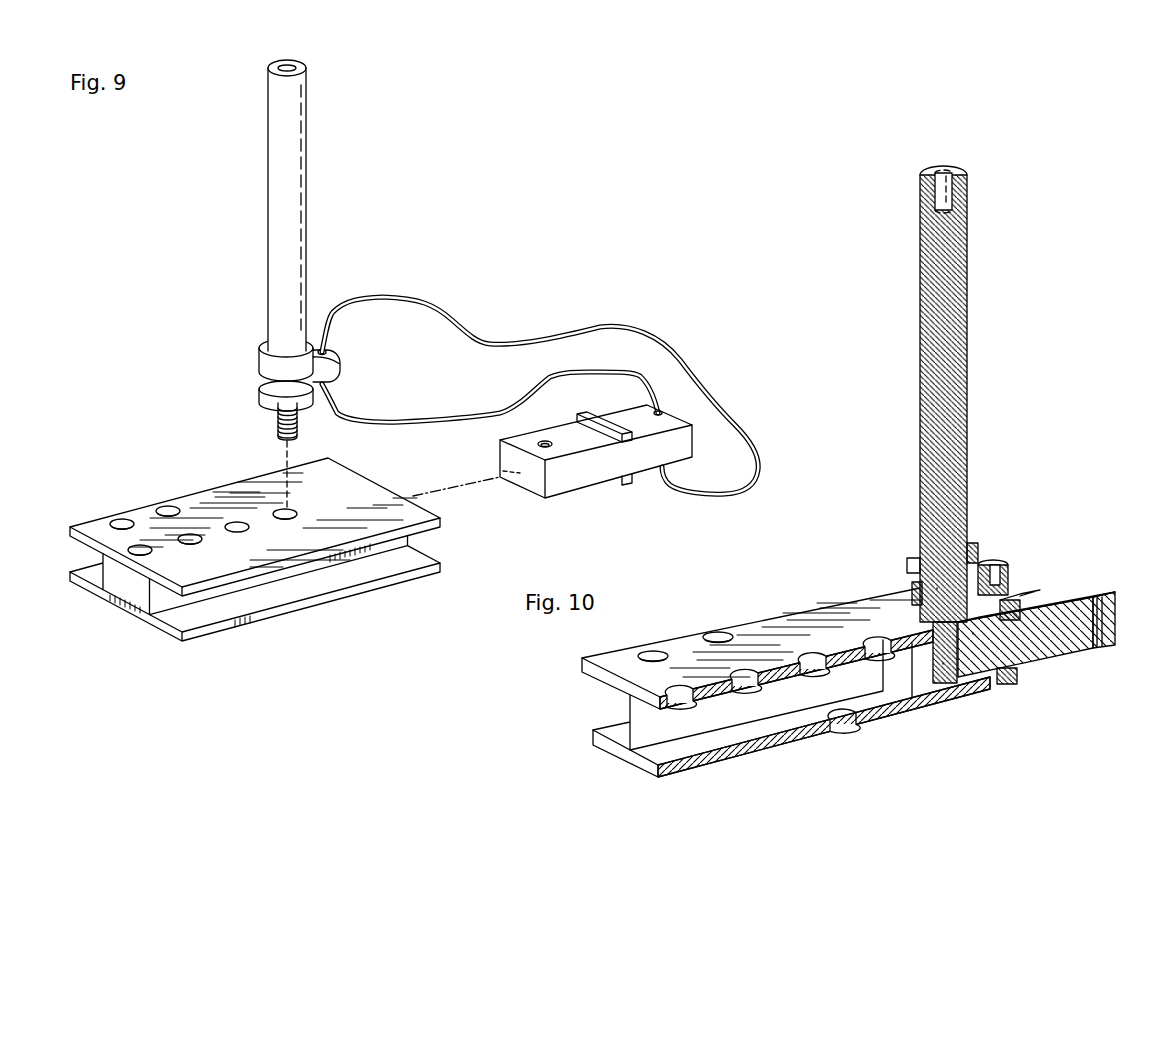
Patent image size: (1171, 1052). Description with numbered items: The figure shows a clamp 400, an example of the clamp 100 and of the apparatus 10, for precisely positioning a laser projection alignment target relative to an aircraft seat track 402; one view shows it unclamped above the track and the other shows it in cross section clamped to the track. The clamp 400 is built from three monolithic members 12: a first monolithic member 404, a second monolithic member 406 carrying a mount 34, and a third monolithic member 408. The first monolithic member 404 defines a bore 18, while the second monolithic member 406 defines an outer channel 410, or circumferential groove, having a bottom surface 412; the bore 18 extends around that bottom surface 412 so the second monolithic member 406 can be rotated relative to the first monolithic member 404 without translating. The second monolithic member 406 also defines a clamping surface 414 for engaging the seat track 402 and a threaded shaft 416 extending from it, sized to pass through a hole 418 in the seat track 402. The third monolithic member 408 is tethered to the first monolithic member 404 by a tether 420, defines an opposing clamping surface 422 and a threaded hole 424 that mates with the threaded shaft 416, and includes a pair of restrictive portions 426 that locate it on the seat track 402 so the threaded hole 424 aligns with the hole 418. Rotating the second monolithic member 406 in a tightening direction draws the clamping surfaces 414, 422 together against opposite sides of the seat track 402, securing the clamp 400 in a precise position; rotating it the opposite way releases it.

In FIG. 9, the apparatus 10 is at (657, 79).
In FIG. 10, the apparatus 10 is at (1092, 108).
In FIG. 9, the monolithic member 12 is at (148, 288).
In FIG. 10, the monolithic member 12 is at (855, 502).
In FIG. 10, the bore 18 is at (937, 588).
In FIG. 9, the mount 34 is at (306, 101).
In FIG. 10, the mount 34 is at (920, 215).
In FIG. 9, the clamp 100 is at (601, 103).
In FIG. 10, the clamp 100 is at (1032, 136).
In FIG. 9, the clamp 400 is at (561, 133).
In FIG. 10, the clamp 400 is at (991, 166).
In FIG. 9, the aircraft seat track 402 is at (165, 633).
In FIG. 10, the aircraft seat track 402 is at (710, 732).
In FIG. 9, the first monolithic member 404 is at (345, 364).
In FIG. 10, the first monolithic member 404 is at (1005, 557).
In FIG. 9, the second monolithic member 406 is at (309, 153).
In FIG. 10, the second monolithic member 406 is at (970, 251).
In FIG. 9, the third monolithic member 408 is at (679, 470).
In FIG. 10, the third monolithic member 408 is at (1076, 663).
In FIG. 10, the outer channel 410 is at (897, 587).
In FIG. 10, the bottom surface 412 is at (917, 615).
In FIG. 9, the clamping surface 414 is at (303, 409).
In FIG. 10, the clamping surface 414 is at (973, 633).
In FIG. 9, the threaded shaft 416 is at (277, 428).
In FIG. 10, the threaded shaft 416 is at (923, 673).
In FIG. 9, the hole 418 is at (290, 512).
In FIG. 10, the hole 418 is at (1090, 588).
In FIG. 9, the tether 420 is at (579, 329).
In FIG. 9, the clamping surface 422 is at (592, 447).
In FIG. 10, the clamping surface 422 is at (1000, 618).
In FIG. 9, the threaded hole 424 is at (547, 441).
In FIG. 10, the threaded hole 424 is at (943, 663).
In FIG. 9, the restrictive portions 426 is at (592, 412).
In FIG. 10, the restrictive portions 426 is at (1010, 590).